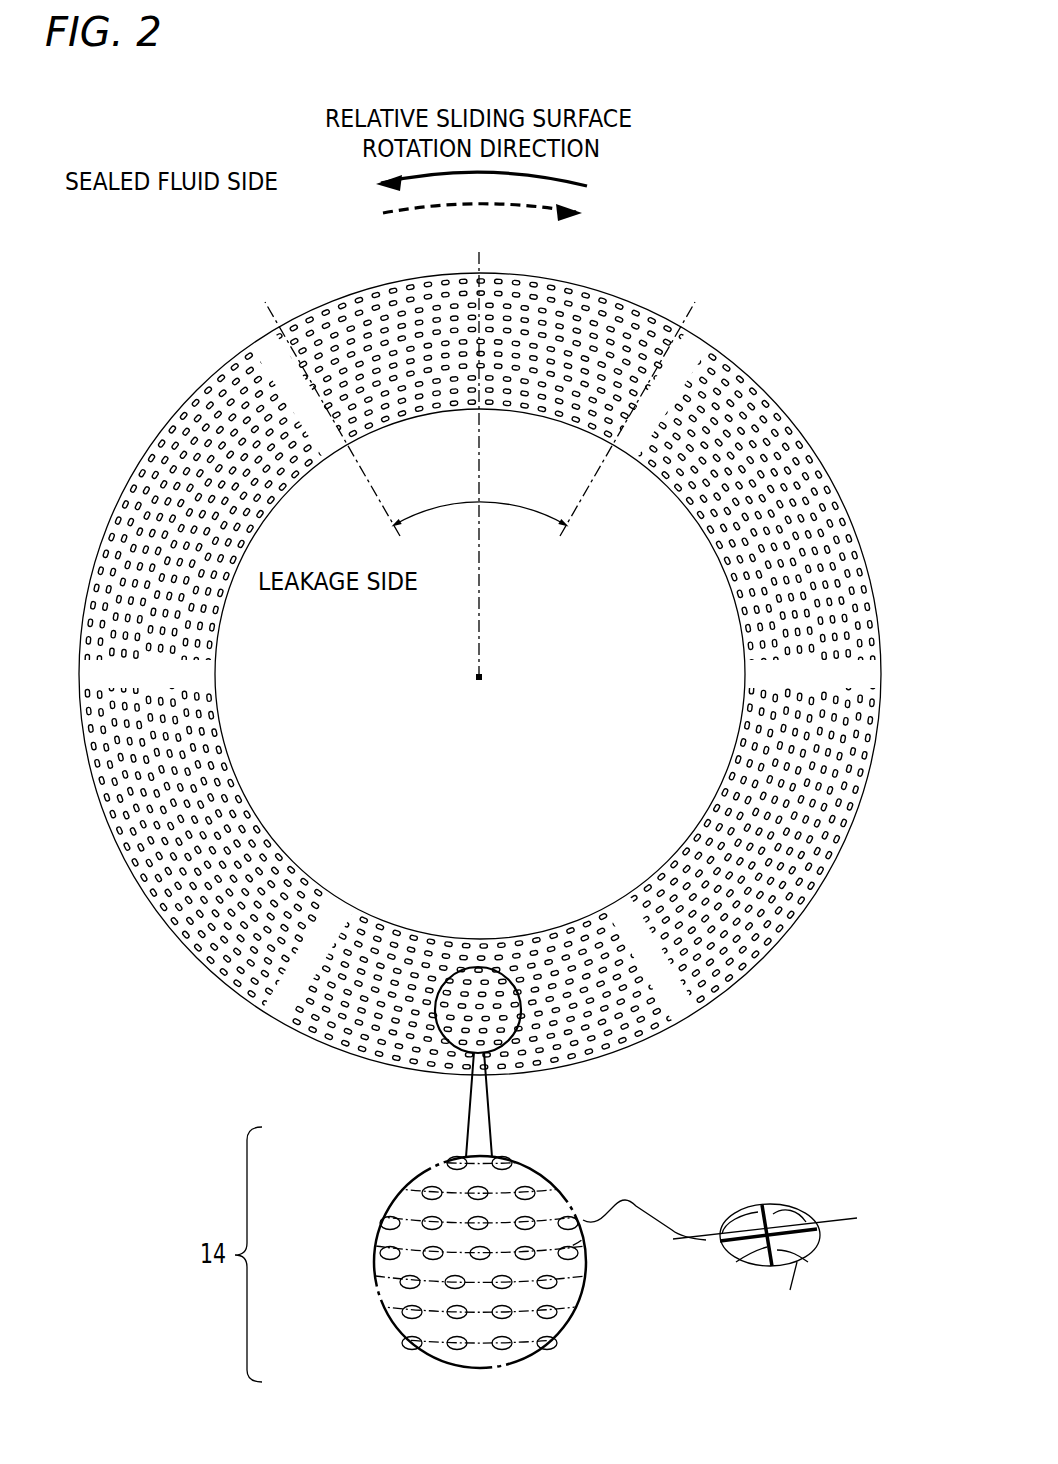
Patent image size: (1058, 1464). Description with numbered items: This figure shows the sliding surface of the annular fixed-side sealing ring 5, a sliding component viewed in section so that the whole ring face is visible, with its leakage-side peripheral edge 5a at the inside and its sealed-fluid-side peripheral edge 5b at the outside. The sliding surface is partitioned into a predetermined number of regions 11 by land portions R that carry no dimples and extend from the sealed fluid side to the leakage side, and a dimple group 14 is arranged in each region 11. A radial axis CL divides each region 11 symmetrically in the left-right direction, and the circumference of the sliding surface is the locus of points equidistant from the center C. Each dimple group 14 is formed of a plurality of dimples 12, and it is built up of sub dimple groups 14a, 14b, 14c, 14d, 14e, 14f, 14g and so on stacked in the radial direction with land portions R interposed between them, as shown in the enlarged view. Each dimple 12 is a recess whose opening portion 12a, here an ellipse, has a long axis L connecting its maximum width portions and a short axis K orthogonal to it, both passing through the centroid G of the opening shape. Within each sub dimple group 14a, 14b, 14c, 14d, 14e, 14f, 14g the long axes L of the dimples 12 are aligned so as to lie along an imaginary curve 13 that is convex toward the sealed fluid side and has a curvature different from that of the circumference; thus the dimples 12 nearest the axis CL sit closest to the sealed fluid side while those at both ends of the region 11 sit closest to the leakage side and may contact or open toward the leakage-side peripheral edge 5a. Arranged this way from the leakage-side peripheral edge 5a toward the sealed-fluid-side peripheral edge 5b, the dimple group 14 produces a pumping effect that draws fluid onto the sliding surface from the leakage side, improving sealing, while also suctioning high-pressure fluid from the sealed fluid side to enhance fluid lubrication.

The fixed-side sealing ring 5 is at (496, 674).
The leakage-side peripheral edge 5a is at (700, 530).
The sealed-fluid-side peripheral edge 5b is at (827, 473).
The region 11 is at (480, 498).
The dimple 12 is at (553, 288).
The opening portion 12a is at (720, 1228).
The imaginary curve 13 is at (644, 1205).
The dimple group 14 is at (372, 287).
The sub dimple group 14a is at (447, 1162).
The sub dimple group 14b is at (422, 1192).
The sub dimple group 14c is at (380, 1222).
The sub dimple group 14d is at (380, 1252).
The sub dimple group 14e is at (400, 1282).
The sub dimple group 14f is at (402, 1312).
The sub dimple group 14g is at (402, 1343).
The land portion R is at (270, 336).
The center C is at (479, 692).
The axis CL is at (478, 448).
The short axis K is at (790, 1202).
The long axis L is at (814, 1255).
The centroid G is at (791, 1290).